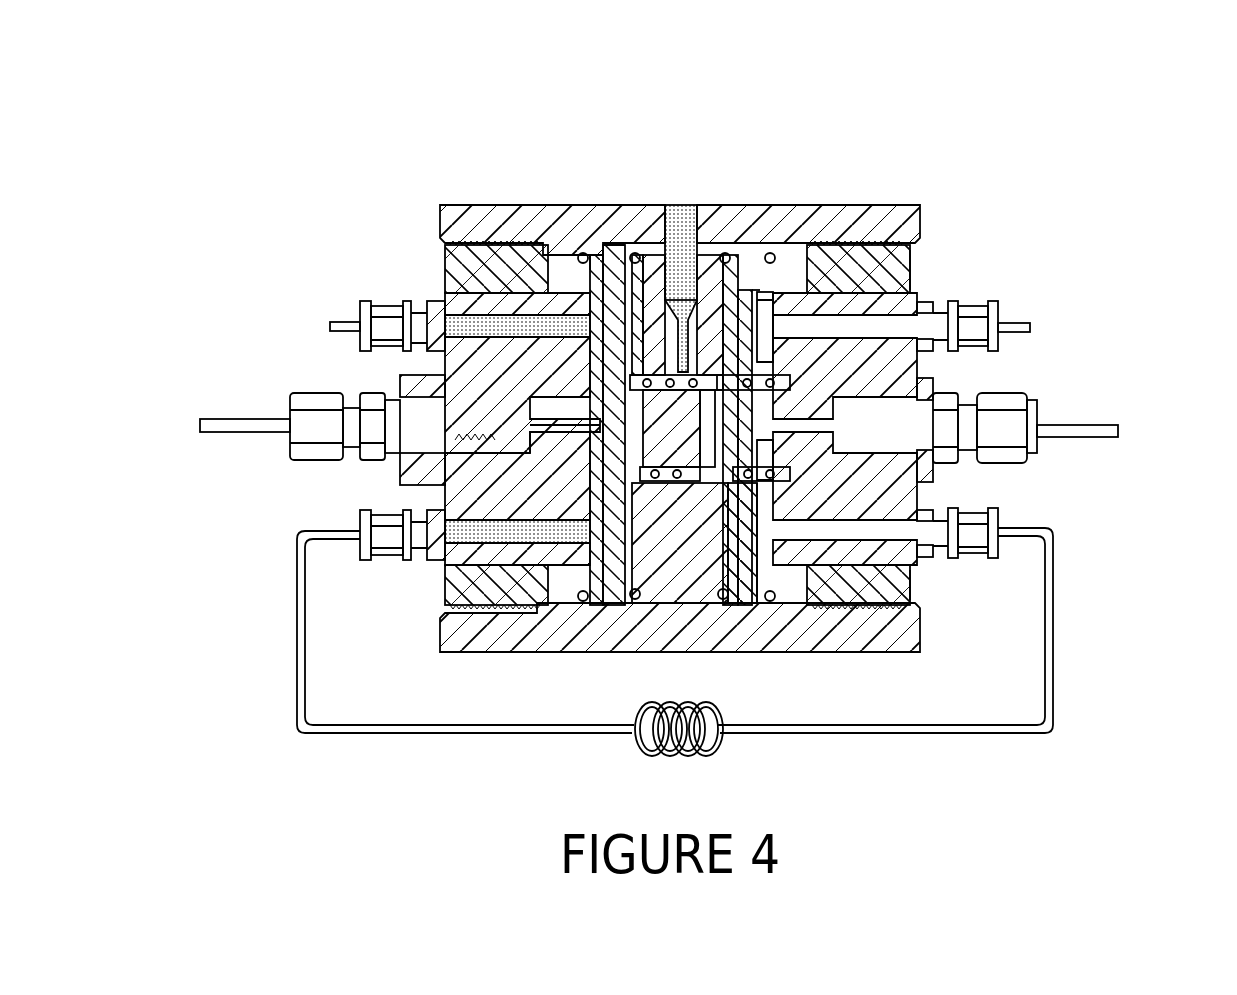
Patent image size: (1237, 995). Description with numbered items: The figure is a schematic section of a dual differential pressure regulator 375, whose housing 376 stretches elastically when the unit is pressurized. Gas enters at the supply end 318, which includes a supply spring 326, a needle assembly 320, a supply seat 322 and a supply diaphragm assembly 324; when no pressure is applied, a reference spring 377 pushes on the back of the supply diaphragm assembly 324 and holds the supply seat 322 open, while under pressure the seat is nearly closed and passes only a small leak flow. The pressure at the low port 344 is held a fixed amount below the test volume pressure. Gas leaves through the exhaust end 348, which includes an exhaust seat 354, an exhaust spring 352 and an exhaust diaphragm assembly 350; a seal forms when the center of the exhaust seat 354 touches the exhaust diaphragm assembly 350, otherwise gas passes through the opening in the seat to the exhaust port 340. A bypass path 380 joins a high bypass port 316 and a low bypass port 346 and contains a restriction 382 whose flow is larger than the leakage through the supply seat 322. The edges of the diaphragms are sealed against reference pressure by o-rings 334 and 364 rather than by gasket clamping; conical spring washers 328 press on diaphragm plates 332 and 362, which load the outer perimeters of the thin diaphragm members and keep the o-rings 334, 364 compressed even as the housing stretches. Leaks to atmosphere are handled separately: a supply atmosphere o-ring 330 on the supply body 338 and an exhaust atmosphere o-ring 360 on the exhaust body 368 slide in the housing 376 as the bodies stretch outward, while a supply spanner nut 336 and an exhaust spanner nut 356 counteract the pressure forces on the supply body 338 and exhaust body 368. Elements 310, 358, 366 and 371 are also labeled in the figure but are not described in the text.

The supply line 310 is at (320, 415).
The high bypass port 316 is at (370, 555).
The supply end 318 is at (312, 798).
The needle assembly 320 is at (445, 503).
The supply seat 322 is at (470, 405).
The supply diaphragm assembly 324 is at (600, 230).
The supply spring 326 is at (440, 467).
The conical spring washers 328 is at (555, 308).
The supply atmosphere o-ring 330 is at (575, 240).
The diaphragm plate 332 is at (610, 230).
The o-ring 334 is at (625, 250).
The supply spanner nut 336 is at (447, 273).
The supply body 338 is at (530, 418).
The exhaust port 340 is at (1037, 405).
The low port 344 is at (990, 302).
The low bypass port 346 is at (995, 532).
The exhaust end 348 is at (850, 770).
The exhaust diaphragm assembly 350 is at (740, 240).
The exhaust spring 352 is at (805, 258).
The exhaust seat 354 is at (848, 250).
The exhaust spanner nut 356 is at (905, 275).
The spring seat 358 is at (770, 355).
The exhaust atmosphere o-ring 360 is at (775, 255).
The diaphragm plate 362 is at (750, 250).
The o-ring 364 is at (710, 230).
The spring 366 is at (790, 460).
The exhaust body 368 is at (995, 548).
The pilot passage 371 is at (688, 205).
The dual differential pressure regulator 375 is at (1048, 128).
The housing 376 is at (685, 640).
The reference spring 377 is at (665, 250).
The bypass path 380 is at (1040, 735).
The restriction 382 is at (643, 748).